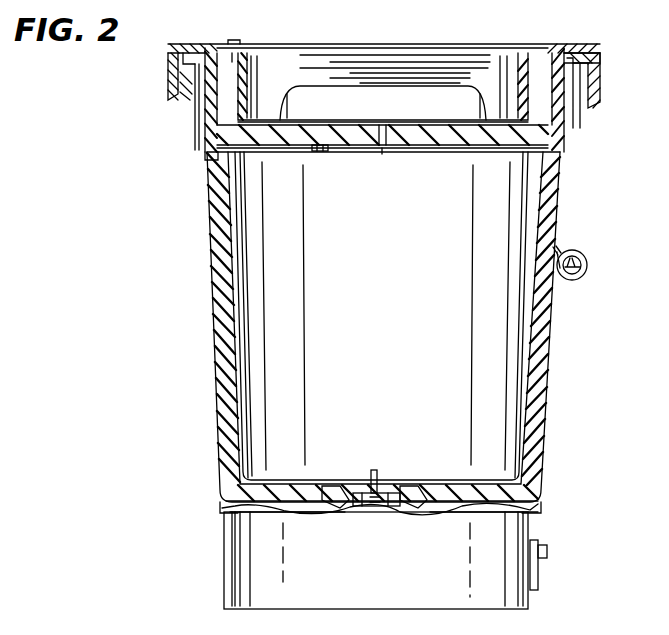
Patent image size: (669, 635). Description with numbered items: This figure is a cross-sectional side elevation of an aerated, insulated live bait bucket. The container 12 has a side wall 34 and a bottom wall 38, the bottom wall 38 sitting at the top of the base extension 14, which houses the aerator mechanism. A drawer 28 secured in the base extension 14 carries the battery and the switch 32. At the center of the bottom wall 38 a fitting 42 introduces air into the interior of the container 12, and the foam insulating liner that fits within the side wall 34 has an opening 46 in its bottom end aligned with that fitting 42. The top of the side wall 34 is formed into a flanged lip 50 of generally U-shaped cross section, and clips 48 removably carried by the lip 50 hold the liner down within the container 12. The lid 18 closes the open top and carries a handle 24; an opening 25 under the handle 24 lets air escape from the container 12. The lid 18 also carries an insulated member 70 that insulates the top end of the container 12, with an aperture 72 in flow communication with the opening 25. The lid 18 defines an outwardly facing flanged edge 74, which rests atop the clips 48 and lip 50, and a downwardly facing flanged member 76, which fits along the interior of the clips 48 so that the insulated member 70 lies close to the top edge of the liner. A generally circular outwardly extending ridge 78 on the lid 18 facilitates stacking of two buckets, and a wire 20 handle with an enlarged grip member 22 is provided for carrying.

The container 12 is at (423, 332).
The base extension 14 is at (536, 600).
The lid 18 is at (252, 70).
The wire 20 is at (588, 260).
The grip member 22 is at (582, 276).
The handle 24 is at (478, 76).
The opening 25 is at (472, 128).
The drawer 28 is at (541, 571).
The switch 32 is at (548, 550).
The side wall 34 is at (553, 396).
The bottom wall 38 is at (308, 484).
The fitting 42 is at (388, 490).
The opening 46 is at (370, 480).
The clips 48 is at (324, 152).
The flanged lip 50 is at (594, 58).
The insulated member 70 is at (268, 142).
The aperture 72 is at (386, 150).
The flanged edge 74 is at (207, 47).
The flanged member 76 is at (208, 161).
The ridge 78 is at (234, 41).